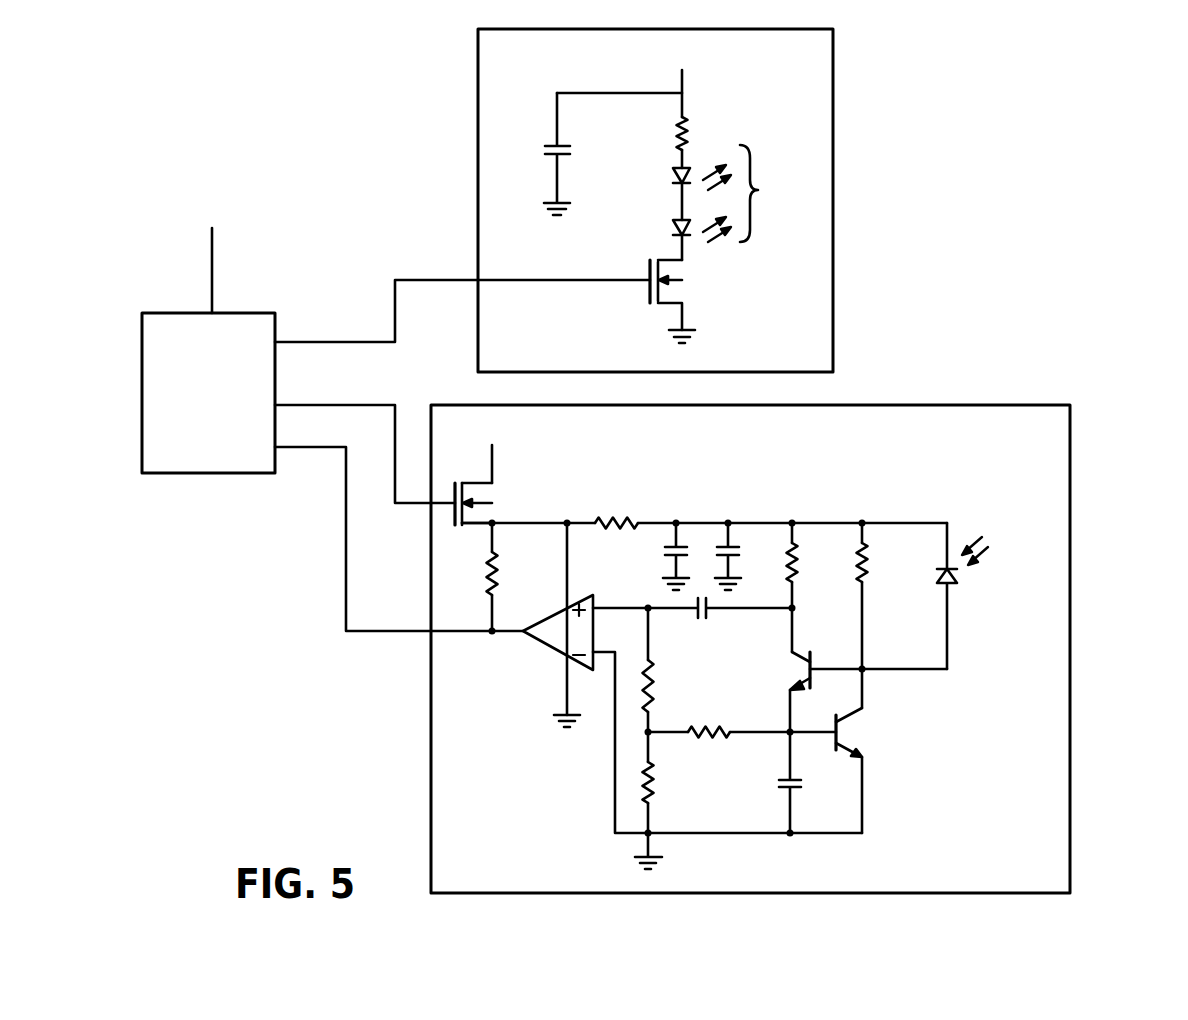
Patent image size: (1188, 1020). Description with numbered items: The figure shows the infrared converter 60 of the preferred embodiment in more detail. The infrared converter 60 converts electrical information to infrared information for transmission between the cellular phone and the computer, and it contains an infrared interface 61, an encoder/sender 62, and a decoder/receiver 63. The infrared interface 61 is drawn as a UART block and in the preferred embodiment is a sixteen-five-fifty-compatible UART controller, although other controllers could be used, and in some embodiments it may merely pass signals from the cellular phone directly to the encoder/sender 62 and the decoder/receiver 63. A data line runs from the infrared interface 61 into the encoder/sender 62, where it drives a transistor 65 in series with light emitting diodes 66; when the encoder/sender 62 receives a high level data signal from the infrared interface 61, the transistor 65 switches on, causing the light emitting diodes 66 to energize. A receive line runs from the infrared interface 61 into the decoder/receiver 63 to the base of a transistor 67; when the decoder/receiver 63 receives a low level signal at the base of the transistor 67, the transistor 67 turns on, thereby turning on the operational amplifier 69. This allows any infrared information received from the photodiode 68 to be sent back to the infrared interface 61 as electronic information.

The infrared converter 60 is at (1070, 264).
The infrared interface 61 is at (228, 473).
The encoder/sender 62 is at (703, 200).
The decoder/receiver 63 is at (793, 649).
The transistor 65 is at (688, 280).
The light emitting diodes 66 is at (758, 190).
The transistor 67 is at (495, 497).
The photodiode 68 is at (960, 580).
The operational amplifier 69 is at (548, 645).